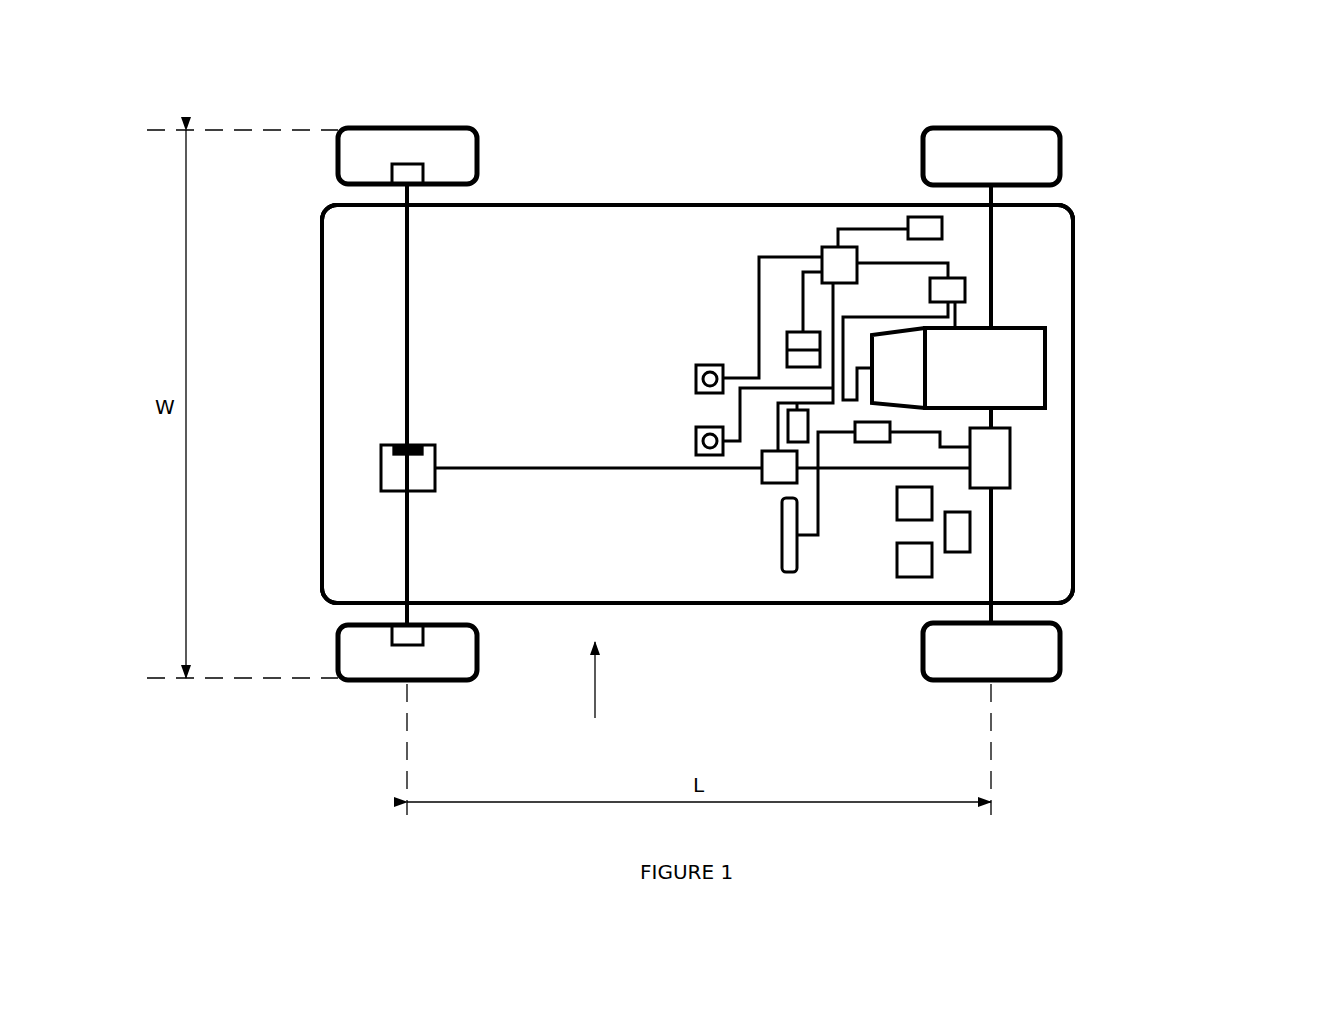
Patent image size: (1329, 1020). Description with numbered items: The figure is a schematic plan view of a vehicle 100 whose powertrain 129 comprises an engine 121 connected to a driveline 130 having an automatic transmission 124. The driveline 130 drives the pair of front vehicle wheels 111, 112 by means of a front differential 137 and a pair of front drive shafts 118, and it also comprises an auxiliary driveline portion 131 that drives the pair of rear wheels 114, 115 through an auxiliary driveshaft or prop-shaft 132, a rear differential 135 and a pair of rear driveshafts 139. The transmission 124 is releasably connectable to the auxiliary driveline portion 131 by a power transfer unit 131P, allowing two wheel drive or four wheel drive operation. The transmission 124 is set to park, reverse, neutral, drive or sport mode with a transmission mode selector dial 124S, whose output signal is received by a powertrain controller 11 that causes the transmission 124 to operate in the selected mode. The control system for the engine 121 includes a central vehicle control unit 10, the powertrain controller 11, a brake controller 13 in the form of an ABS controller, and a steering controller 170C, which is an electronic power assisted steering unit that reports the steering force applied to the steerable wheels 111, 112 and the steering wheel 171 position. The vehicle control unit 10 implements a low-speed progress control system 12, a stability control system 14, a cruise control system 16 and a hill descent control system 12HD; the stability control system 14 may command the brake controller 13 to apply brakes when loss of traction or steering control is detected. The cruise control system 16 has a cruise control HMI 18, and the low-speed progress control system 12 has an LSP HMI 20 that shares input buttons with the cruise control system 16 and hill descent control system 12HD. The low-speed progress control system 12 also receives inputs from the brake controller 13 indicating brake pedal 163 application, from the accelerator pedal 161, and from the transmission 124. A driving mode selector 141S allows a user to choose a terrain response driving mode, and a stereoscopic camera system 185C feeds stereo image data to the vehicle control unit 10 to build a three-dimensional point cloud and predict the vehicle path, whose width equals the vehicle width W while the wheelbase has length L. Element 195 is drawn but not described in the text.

The vehicle 100 is at (1200, 138).
The powertrain 129 is at (1193, 317).
The driveline 130 is at (1170, 483).
The front vehicle wheel 111 is at (1035, 150).
The front vehicle wheel 112 is at (1040, 663).
The rear wheel 114 is at (381, 150).
The rear wheel 115 is at (363, 653).
The front drive shaft 118 is at (992, 247).
The rear driveshaft 139 is at (407, 275).
The rear differential 135 is at (381, 469).
The engine 121 is at (1017, 356).
The automatic transmission 124 is at (898, 347).
The vehicle control unit 10 is at (764, 162).
The low-speed progress control system 12 is at (764, 162).
The stability control system 14 is at (764, 162).
The cruise control system 16 is at (764, 162).
The hill descent control system 12HD is at (832, 255).
The brake controller 13 is at (915, 217).
The powertrain controller 11 is at (965, 292).
The driving mode selector 141S is at (696, 378).
The transmission mode selector dial 124S is at (696, 441).
The cruise control HMI 18 is at (756, 243).
The low-speed progress control HMI 20 is at (787, 332).
The stereoscopic camera system 185C is at (793, 408).
The power transfer unit 131P is at (773, 477).
The prop-shaft 132 is at (556, 470).
The auxiliary driveline portion 131 is at (596, 696).
The front differential 137 is at (1010, 450).
The steering controller 170C is at (872, 440).
The steering wheel 171 is at (792, 567).
The brake pedal 163 is at (897, 505).
The accelerator pedal 161 is at (912, 567).
The fuel tank 195 is at (968, 548).